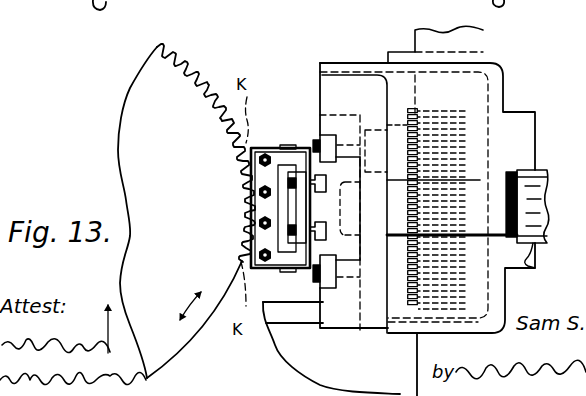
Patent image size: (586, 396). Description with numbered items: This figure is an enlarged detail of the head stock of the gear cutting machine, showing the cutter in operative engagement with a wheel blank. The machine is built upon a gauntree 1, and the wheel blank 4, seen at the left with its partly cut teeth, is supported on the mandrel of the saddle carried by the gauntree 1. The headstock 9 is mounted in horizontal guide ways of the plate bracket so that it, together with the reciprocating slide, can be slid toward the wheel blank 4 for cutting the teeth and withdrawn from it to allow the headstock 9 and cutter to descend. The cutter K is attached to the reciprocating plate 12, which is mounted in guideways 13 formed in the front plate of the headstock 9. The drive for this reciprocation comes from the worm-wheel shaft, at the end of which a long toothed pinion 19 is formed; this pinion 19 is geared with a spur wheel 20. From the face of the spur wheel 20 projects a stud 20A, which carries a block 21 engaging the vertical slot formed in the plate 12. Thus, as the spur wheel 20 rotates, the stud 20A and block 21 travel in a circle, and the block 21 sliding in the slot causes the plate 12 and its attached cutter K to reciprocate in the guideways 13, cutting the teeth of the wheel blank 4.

The gauntree 1 is at (340, 349).
The wheel blank 4 is at (186, 211).
The headstock 9 is at (351, 63).
The reciprocating plate 12 is at (293, 208).
The guideways 13 is at (320, 134).
The long toothed pinion 19 is at (473, 187).
The spur wheel 20 is at (433, 293).
The stud 20A is at (347, 140).
The block 21 is at (377, 131).